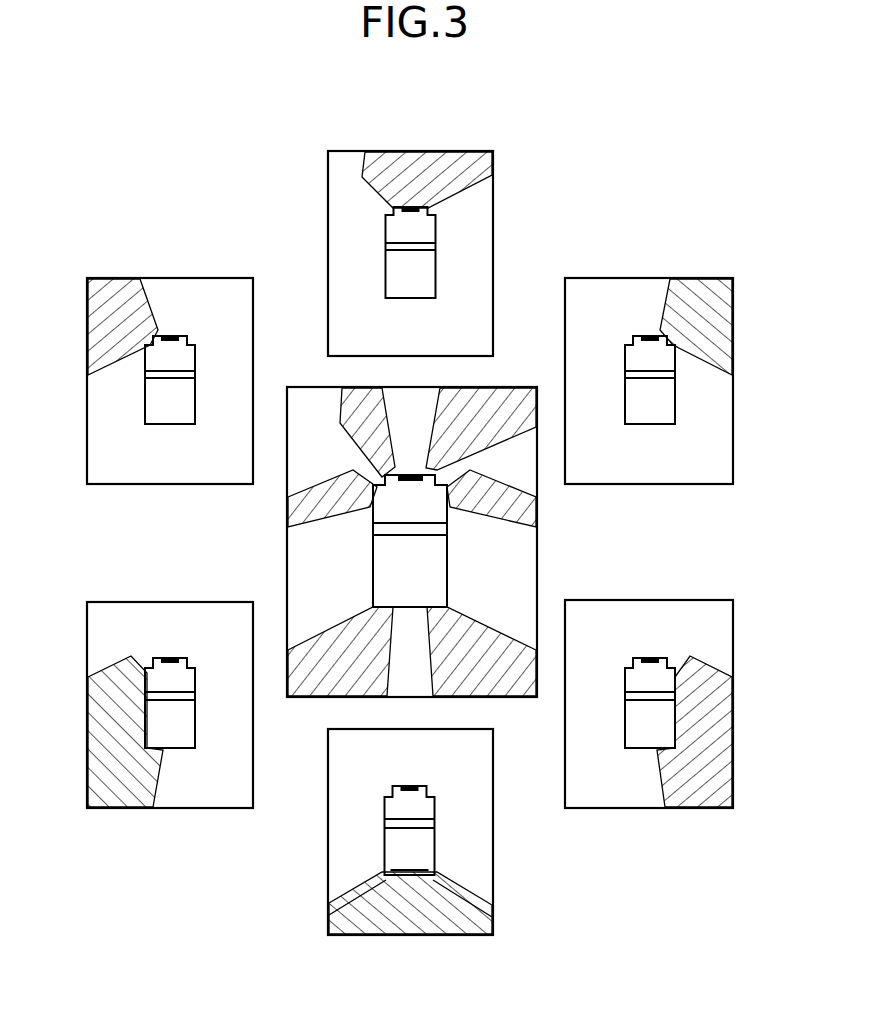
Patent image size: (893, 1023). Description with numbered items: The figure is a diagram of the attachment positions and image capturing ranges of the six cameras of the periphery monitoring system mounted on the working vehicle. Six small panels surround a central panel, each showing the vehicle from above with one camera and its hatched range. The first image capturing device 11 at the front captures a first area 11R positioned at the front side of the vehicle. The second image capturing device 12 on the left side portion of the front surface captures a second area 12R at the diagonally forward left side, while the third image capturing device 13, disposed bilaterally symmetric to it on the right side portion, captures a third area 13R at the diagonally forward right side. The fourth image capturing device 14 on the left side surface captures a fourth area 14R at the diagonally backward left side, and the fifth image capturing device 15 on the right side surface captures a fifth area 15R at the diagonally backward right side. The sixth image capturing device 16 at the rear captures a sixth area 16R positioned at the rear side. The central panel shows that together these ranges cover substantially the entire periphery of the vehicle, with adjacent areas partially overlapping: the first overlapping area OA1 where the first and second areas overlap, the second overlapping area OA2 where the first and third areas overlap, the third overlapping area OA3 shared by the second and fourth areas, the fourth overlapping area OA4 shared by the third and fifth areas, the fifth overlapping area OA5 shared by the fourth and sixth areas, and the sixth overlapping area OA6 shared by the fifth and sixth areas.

The first image capturing device 11 is at (395, 210).
The first area 11R is at (413, 162).
The second image capturing device 12 is at (150, 343).
The second area 12R is at (117, 285).
The third image capturing device 13 is at (673, 345).
The third area 13R is at (702, 290).
The fourth image capturing device 14 is at (147, 677).
The fourth area 14R is at (117, 803).
The fifth image capturing device 15 is at (675, 677).
The fifth area 15R is at (700, 793).
The sixth image capturing device 16 is at (414, 863).
The sixth area 16R is at (417, 925).
The first overlapping area OA1 is at (352, 385).
The second overlapping area OA2 is at (497, 390).
The third overlapping area OA3 is at (296, 512).
The fourth overlapping area OA4 is at (527, 512).
The fifth overlapping area OA5 is at (308, 680).
The sixth overlapping area OA6 is at (503, 678).